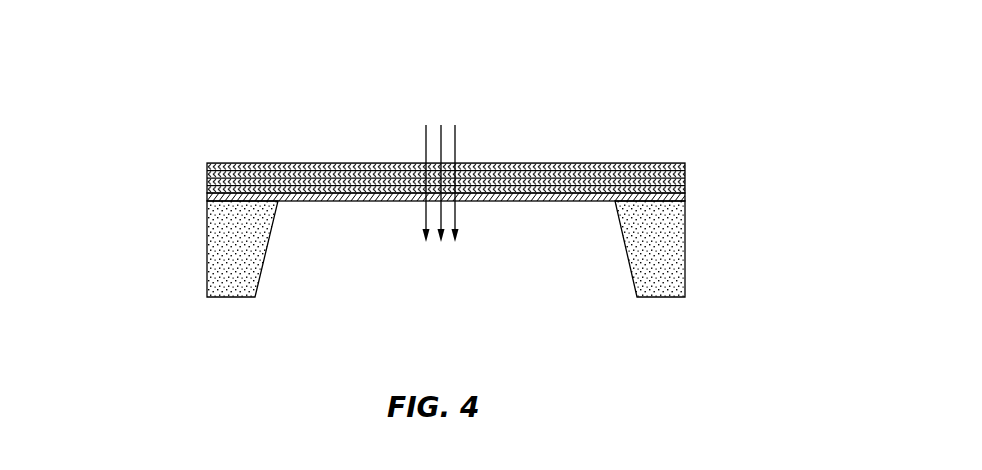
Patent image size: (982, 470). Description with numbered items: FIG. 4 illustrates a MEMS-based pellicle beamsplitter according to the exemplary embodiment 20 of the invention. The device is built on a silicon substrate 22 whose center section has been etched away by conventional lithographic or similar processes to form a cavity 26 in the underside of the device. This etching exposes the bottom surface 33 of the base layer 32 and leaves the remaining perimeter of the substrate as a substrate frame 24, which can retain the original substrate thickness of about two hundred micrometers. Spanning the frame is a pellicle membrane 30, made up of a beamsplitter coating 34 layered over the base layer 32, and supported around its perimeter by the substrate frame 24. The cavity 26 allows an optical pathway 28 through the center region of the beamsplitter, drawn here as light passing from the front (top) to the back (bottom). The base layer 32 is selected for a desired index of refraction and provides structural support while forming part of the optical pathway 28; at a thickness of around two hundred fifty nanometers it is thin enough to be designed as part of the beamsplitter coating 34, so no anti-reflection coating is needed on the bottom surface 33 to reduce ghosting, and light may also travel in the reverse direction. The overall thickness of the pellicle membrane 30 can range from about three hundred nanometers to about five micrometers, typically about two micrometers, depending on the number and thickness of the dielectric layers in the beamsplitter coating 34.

The exemplary embodiment 20 is at (672, 83).
The silicon substrate 22 is at (685, 283).
The substrate frame 24 is at (623, 258).
The cavity 26 is at (383, 265).
The optical pathway 28 is at (459, 139).
The pellicle membrane 30 is at (690, 202).
The base layer 32 is at (207, 201).
The bottom surface 33 is at (513, 201).
The beamsplitter coating 34 is at (198, 193).